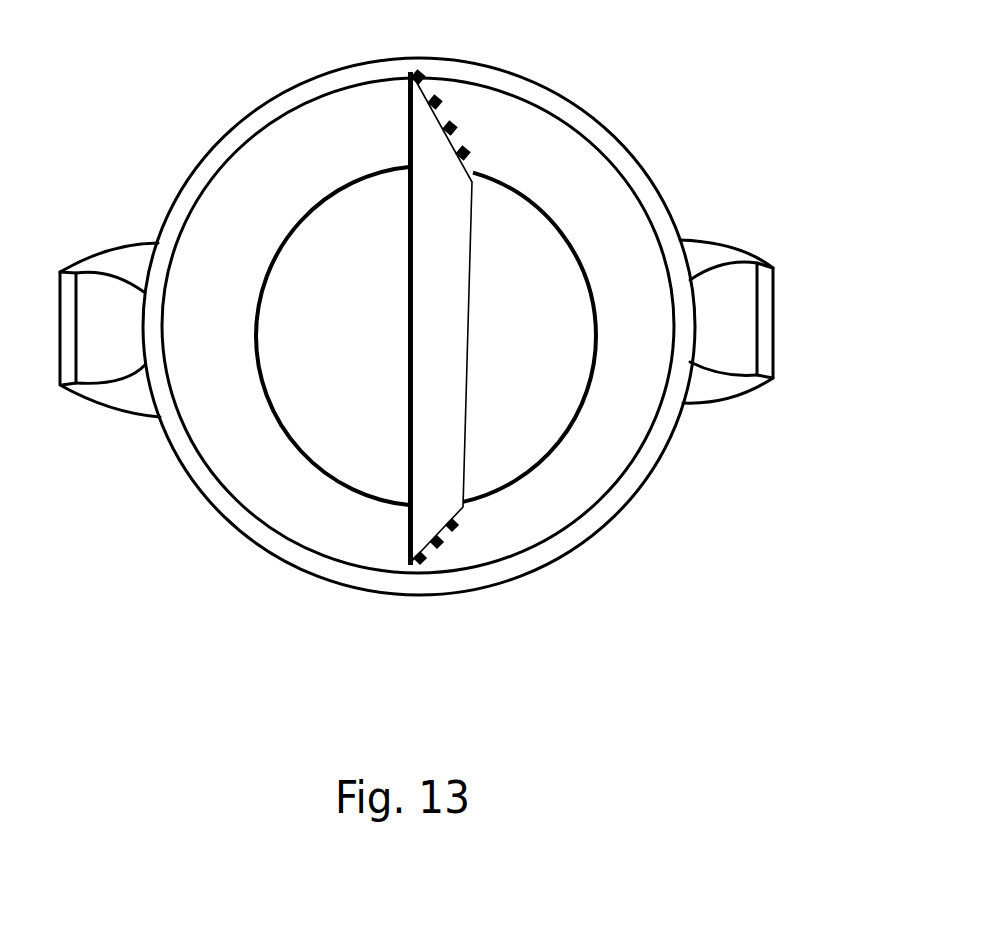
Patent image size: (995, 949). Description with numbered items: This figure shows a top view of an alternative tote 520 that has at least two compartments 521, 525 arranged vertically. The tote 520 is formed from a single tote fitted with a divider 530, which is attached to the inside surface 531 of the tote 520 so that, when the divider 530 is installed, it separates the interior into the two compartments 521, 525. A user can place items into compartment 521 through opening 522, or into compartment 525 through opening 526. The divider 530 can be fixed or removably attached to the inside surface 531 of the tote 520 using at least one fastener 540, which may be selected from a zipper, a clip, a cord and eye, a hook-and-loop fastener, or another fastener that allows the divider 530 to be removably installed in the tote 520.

The alternative tote 520 is at (247, 550).
The compartment 521 is at (322, 303).
The opening 522 is at (303, 395).
The compartment 525 is at (512, 265).
The opening 526 is at (533, 407).
The divider 530 is at (405, 207).
The inside surface 531 is at (622, 302).
The fastener 540 is at (462, 120).